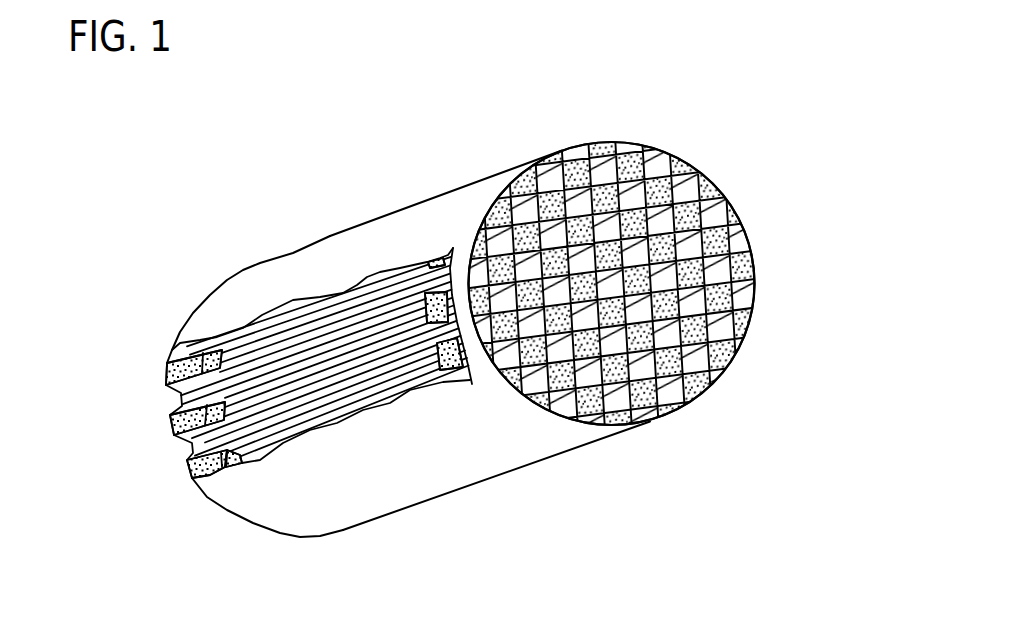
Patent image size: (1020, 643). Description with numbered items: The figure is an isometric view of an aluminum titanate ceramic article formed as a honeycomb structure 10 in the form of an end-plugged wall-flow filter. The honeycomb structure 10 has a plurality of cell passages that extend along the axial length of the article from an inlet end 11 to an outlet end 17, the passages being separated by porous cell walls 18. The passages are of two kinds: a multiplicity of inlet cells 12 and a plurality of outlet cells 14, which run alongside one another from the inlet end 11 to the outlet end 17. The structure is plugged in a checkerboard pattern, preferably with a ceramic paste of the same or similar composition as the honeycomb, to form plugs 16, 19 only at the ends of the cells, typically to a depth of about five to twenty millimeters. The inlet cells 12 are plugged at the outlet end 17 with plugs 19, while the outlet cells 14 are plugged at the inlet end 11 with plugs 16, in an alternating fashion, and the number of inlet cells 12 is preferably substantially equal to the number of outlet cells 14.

The honeycomb structure 10 is at (444, 163).
The inlet end 11 is at (135, 487).
The inlet cells 12 is at (257, 377).
The outlet cells 14 is at (624, 296).
The plugs 16 is at (167, 427).
The outlet end 17 is at (656, 296).
The cell walls 18 is at (318, 314).
The plugs 19 is at (786, 161).